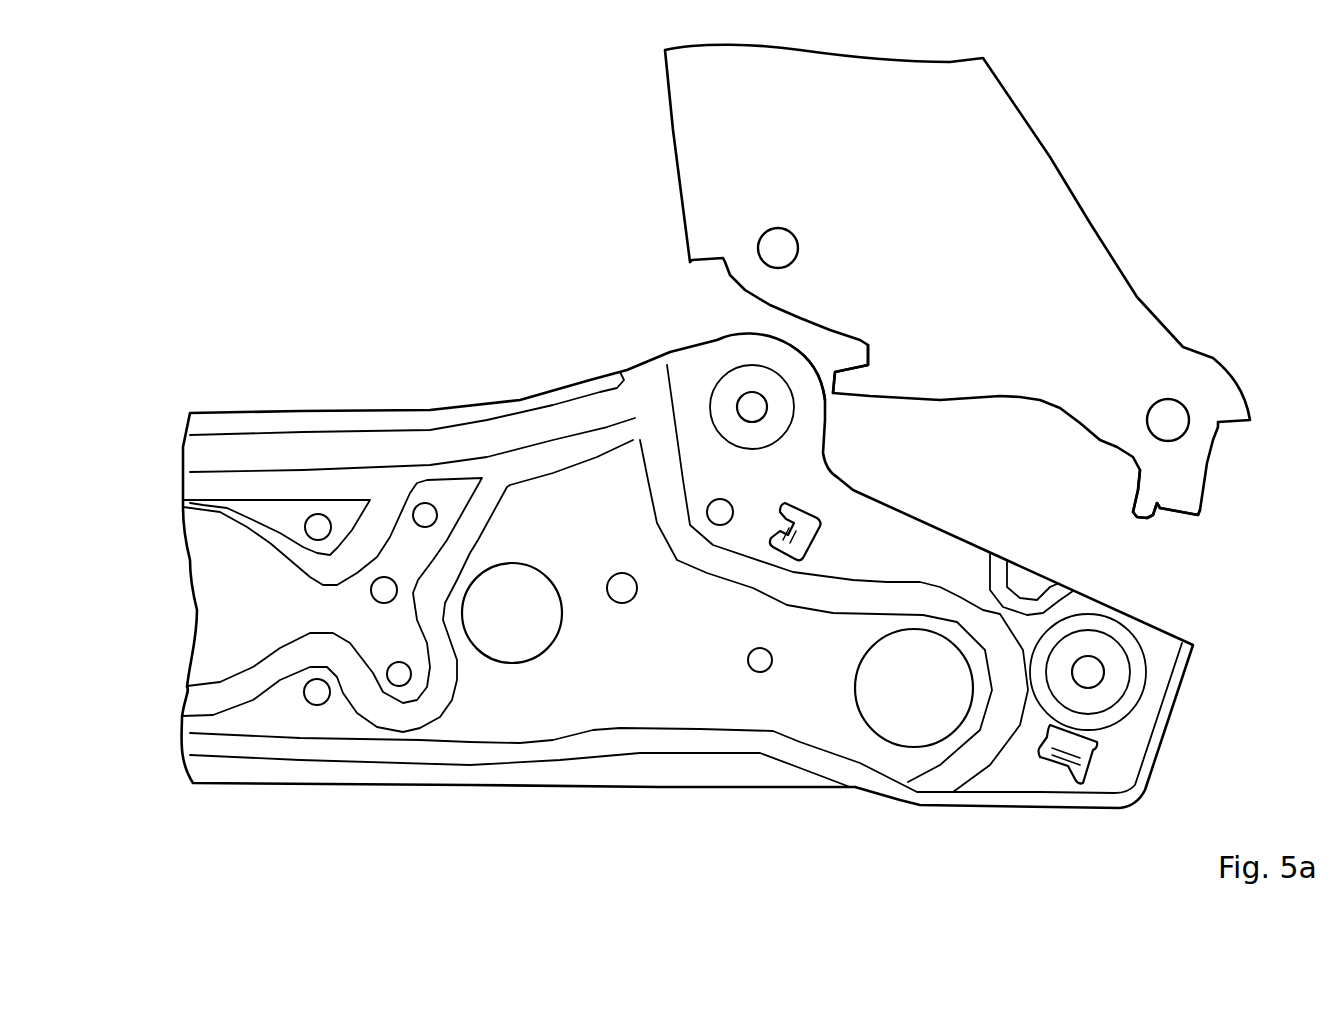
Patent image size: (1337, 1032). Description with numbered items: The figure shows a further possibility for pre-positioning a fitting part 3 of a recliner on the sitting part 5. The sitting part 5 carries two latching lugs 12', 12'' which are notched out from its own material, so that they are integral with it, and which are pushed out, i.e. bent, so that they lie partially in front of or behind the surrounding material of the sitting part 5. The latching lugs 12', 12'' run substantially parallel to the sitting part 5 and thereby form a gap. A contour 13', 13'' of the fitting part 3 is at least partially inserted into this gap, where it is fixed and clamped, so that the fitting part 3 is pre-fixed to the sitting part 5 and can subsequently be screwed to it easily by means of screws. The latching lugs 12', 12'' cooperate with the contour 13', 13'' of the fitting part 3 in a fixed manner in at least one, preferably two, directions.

The fitting part 3 is at (1050, 220).
The sitting part 5 is at (744, 770).
The latching lug 12' is at (865, 508).
The latching lug 12'' is at (1161, 754).
The contour 13' is at (718, 313).
The contour 13'' is at (1222, 519).